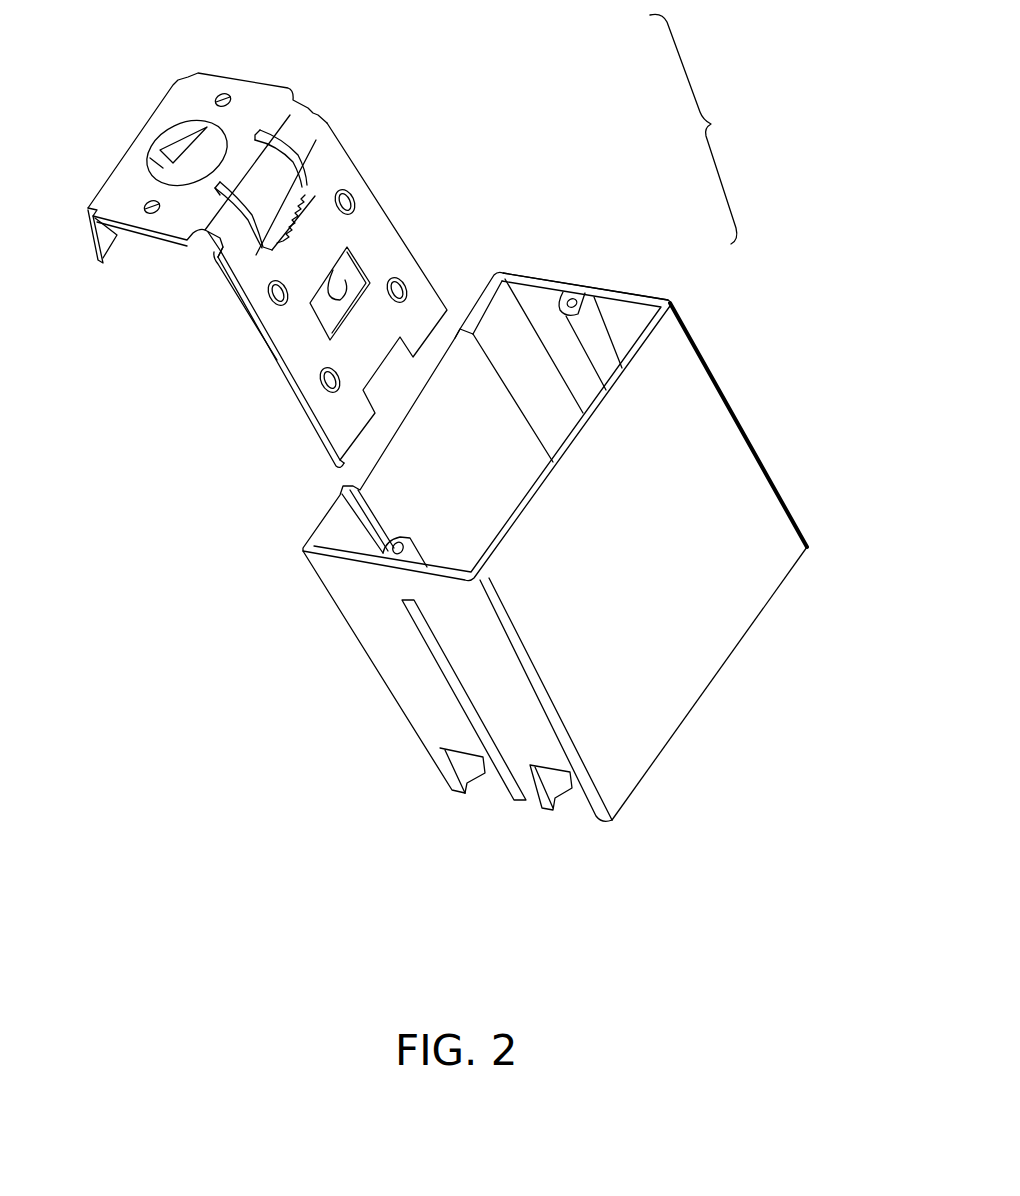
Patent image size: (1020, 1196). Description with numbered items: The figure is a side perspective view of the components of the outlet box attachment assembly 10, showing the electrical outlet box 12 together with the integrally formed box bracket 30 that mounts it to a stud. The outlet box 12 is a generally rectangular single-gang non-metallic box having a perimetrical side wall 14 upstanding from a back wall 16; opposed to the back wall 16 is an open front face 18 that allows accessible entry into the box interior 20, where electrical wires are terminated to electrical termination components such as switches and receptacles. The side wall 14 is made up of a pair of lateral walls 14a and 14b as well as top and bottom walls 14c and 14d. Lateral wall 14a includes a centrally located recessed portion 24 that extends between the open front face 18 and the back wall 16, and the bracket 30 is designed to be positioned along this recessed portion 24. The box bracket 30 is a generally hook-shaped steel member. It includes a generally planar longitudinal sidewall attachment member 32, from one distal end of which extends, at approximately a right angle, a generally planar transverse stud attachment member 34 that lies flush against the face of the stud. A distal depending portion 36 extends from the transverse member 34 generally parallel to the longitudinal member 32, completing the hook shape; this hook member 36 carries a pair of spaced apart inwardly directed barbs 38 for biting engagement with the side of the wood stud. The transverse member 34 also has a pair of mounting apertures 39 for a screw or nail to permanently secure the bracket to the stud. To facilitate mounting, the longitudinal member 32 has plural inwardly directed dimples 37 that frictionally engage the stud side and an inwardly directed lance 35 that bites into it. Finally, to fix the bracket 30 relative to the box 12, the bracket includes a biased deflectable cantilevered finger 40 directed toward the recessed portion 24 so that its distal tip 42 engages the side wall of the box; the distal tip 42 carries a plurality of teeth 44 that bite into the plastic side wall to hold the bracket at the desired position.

The outlet box attachment assembly 10 is at (697, 129).
The electrical outlet box 12 is at (758, 368).
The perimetrical side wall 14 is at (567, 521).
The lateral wall 14a is at (506, 338).
The lateral wall 14b is at (760, 540).
The top wall 14c is at (622, 290).
The bottom wall 14d is at (375, 645).
The back wall 16 is at (668, 733).
The open front face 18 is at (390, 488).
The box interior 20 is at (482, 445).
The recessed portion 24 is at (458, 333).
The box bracket 30 is at (352, 74).
The longitudinal sidewall attachment member 32 is at (372, 228).
The transverse stud attachment member 34 is at (262, 100).
The lance 35 is at (350, 283).
The distal depending portion 36 is at (118, 238).
The dimples 37 is at (325, 388).
The barbs 38 is at (88, 234).
The mounting apertures 39 is at (222, 93).
The cantilevered finger 40 is at (290, 155).
The distal tip 42 is at (290, 178).
The teeth 44 is at (258, 262).